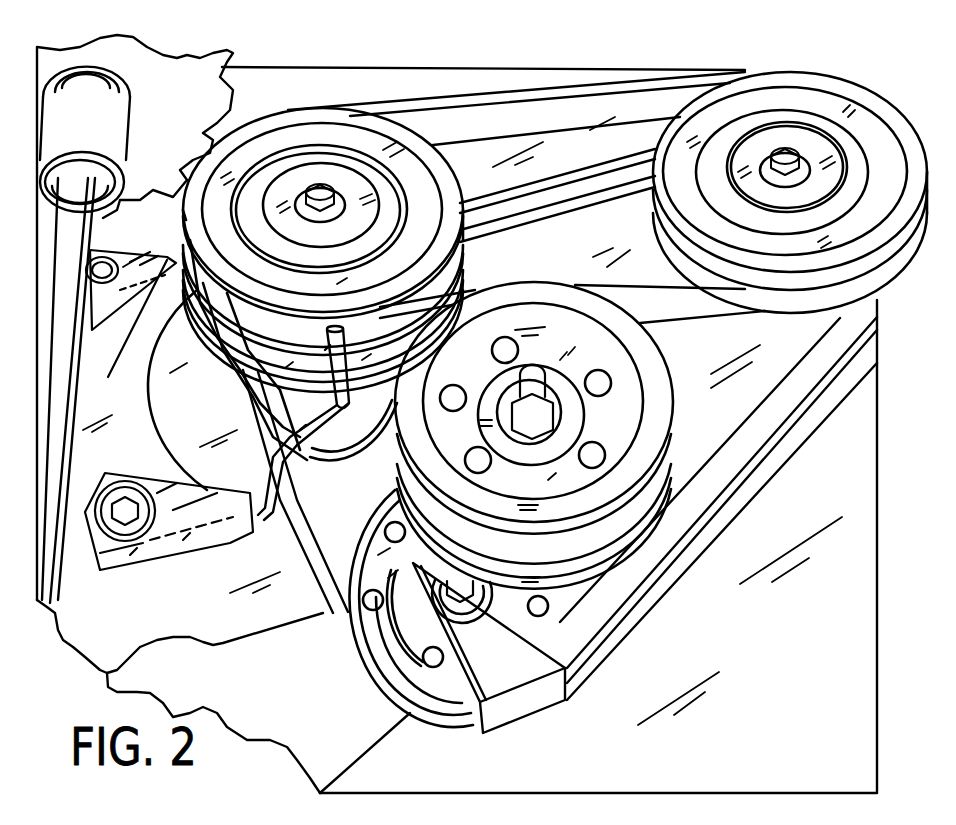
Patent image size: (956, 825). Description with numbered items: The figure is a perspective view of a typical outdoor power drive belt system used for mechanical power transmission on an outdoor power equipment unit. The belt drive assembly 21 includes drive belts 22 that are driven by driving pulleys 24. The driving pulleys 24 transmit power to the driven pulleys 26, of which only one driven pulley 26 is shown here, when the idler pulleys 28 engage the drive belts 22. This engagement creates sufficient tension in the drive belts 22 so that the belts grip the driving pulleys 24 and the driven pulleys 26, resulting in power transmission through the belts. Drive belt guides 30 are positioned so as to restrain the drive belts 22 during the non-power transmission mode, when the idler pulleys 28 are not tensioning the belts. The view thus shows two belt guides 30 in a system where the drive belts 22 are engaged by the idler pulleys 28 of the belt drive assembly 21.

The belt drive assembly 21 is at (695, 596).
The drive belts 22 is at (605, 185).
The driving pulleys 24 is at (245, 205).
The driven pulleys 26 is at (783, 103).
The idler pulleys 28 is at (650, 435).
The drive belt guides 30 is at (283, 430).